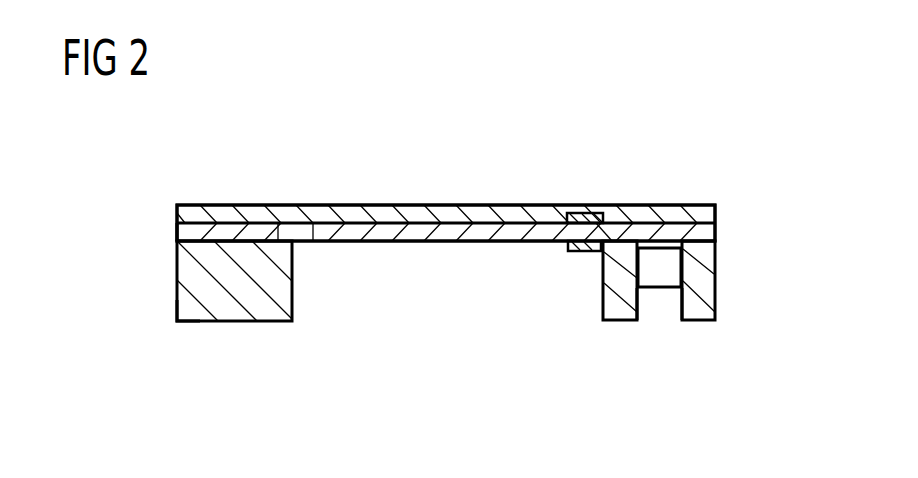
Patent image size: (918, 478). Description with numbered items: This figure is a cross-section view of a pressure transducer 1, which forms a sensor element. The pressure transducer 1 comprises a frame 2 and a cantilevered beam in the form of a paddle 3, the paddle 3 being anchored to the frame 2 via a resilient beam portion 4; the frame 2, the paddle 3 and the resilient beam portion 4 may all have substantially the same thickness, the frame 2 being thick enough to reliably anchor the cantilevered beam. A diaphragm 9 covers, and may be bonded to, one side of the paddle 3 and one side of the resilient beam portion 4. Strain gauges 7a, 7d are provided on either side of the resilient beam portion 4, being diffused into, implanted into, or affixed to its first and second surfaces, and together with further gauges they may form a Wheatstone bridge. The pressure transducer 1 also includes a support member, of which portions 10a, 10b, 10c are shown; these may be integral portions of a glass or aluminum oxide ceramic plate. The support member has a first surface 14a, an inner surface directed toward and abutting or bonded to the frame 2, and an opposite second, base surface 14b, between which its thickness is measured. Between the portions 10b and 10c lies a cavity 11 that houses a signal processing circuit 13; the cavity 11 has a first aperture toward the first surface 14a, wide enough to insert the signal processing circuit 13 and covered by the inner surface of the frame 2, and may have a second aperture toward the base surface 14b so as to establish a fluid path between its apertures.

The pressure transducer 1 is at (635, 128).
The frame 2 is at (698, 233).
The paddle 3 is at (421, 242).
The resilient beam portion 4 is at (602, 228).
The strain gauge 7a is at (587, 212).
The strain gauge 7d is at (583, 253).
The diaphragm 9 is at (433, 206).
The portion of support member 10a is at (237, 313).
The portion of support member 10b is at (622, 312).
The portion of support member 10c is at (697, 312).
The cavity 11 is at (662, 305).
The signal processing circuit 13 is at (659, 267).
The first surface 14a is at (163, 240).
The second surface 14b is at (163, 323).